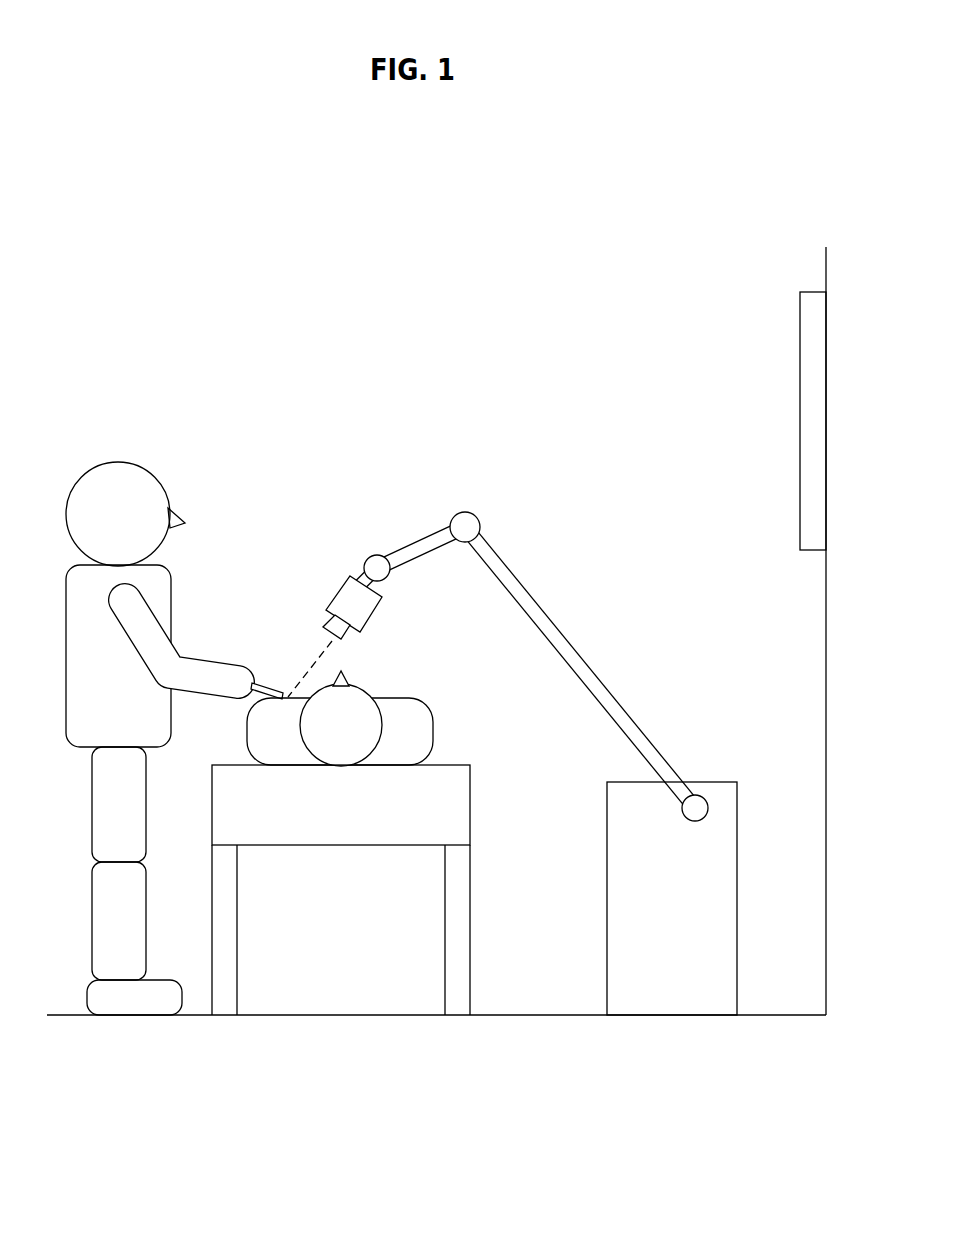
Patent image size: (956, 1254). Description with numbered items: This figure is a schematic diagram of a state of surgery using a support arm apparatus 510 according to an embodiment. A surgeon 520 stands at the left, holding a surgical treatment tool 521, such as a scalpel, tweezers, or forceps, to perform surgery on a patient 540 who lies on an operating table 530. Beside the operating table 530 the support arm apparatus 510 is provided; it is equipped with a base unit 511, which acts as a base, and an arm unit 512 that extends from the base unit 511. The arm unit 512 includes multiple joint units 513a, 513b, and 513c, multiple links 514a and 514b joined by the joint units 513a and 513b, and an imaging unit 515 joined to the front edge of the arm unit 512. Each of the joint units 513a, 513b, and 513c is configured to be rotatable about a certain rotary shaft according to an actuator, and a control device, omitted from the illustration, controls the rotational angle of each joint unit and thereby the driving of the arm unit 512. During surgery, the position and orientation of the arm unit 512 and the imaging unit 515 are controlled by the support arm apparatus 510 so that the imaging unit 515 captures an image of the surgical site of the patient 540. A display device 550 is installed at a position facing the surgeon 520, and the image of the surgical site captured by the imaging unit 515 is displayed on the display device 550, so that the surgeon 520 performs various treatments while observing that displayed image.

The support arm apparatus 510 is at (542, 731).
The base unit 511 is at (737, 897).
The arm unit 512 is at (512, 636).
The joint unit 513a is at (705, 792).
The joint unit 513b is at (463, 510).
The joint unit 513c is at (365, 563).
The link 514a is at (592, 658).
The link 514b is at (415, 540).
The imaging unit 515 is at (378, 610).
The surgeon 520 is at (117, 462).
The surgical treatment tool 521 is at (258, 684).
The operating table 530 is at (470, 800).
The patient 540 is at (433, 730).
The display device 550 is at (798, 338).